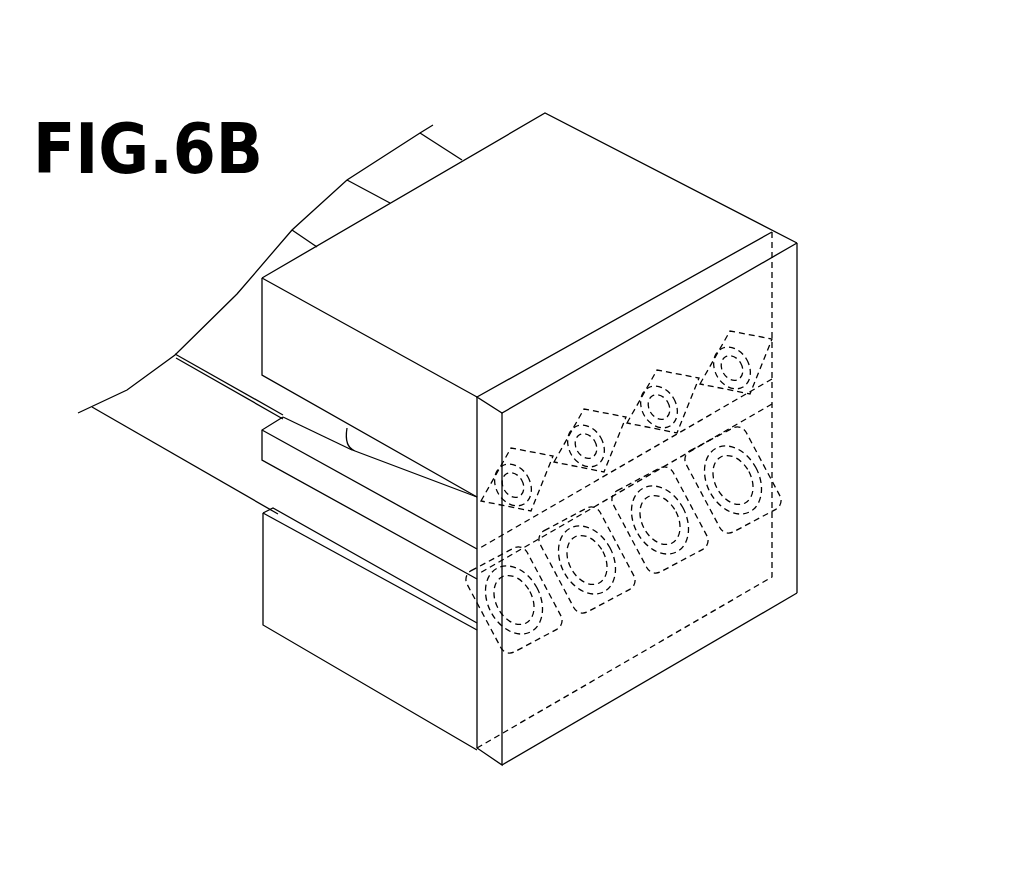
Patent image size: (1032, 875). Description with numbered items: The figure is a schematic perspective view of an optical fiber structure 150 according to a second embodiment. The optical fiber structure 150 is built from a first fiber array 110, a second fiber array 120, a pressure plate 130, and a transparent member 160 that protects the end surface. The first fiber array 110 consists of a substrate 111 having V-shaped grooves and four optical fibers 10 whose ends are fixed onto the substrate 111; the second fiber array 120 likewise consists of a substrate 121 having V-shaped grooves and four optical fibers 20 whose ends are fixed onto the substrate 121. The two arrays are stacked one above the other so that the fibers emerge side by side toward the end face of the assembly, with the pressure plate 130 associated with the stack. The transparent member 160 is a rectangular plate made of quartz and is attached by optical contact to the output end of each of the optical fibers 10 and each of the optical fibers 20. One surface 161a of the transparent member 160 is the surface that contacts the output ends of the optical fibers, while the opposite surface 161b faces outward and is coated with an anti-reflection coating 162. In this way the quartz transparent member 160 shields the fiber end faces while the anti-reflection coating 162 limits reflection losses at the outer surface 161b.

The optical fiber structure 150 is at (510, 68).
The first fiber array 110 is at (816, 222).
The substrate 111 is at (610, 165).
The second fiber array 120 is at (473, 766).
The substrate 121 is at (400, 708).
The pressure plate 130 is at (762, 383).
The transparent member 160 is at (797, 403).
The surface 161a is at (748, 240).
The surface 161b is at (693, 655).
The anti-reflection coating 162 is at (752, 622).
The optical fibers 10 is at (537, 452).
The optical fibers 20 is at (518, 642).